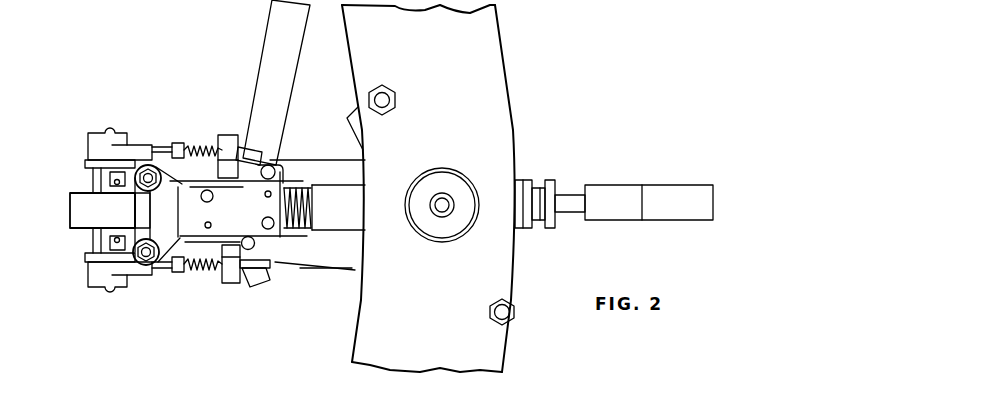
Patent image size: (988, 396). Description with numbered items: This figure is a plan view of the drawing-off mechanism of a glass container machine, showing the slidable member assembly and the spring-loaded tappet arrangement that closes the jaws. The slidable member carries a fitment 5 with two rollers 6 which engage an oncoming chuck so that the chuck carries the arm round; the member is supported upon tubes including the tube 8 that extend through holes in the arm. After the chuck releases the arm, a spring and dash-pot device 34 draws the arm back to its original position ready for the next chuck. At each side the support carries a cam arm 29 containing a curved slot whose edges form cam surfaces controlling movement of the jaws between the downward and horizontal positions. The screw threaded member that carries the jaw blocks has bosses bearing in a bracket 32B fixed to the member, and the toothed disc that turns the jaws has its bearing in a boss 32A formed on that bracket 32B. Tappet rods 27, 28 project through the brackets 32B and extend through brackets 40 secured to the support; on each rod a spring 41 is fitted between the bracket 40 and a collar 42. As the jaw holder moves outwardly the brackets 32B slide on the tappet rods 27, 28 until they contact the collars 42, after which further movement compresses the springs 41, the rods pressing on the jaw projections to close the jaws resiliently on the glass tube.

The fitment 5 is at (233, 219).
The rollers 6 is at (149, 163).
The tube 8 is at (307, 187).
The tappet rod 27 is at (203, 272).
The tappet rod 28 is at (205, 146).
The cam arm 29 is at (235, 135).
The boss 32A is at (93, 147).
The bracket 32B is at (131, 148).
The spring and dash-pot device 34 is at (272, 43).
The bracket 40 is at (240, 140).
The spring 41 is at (190, 160).
The collar 42 is at (177, 142).